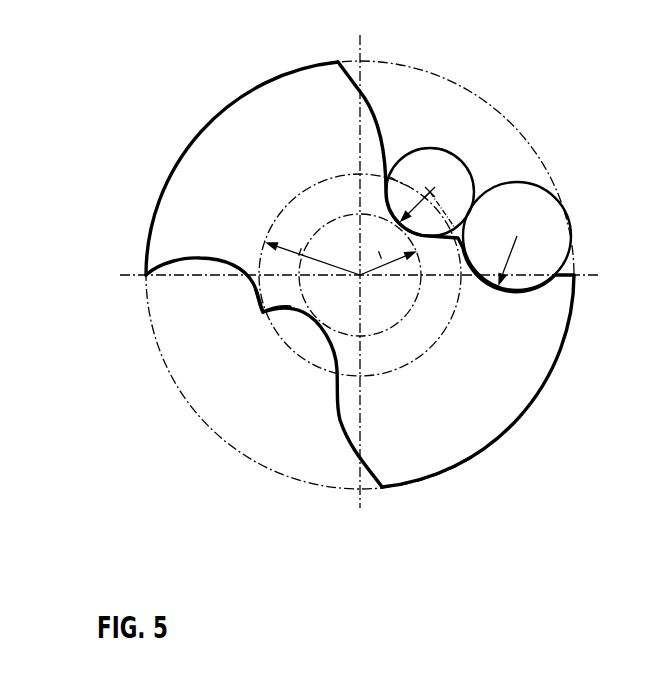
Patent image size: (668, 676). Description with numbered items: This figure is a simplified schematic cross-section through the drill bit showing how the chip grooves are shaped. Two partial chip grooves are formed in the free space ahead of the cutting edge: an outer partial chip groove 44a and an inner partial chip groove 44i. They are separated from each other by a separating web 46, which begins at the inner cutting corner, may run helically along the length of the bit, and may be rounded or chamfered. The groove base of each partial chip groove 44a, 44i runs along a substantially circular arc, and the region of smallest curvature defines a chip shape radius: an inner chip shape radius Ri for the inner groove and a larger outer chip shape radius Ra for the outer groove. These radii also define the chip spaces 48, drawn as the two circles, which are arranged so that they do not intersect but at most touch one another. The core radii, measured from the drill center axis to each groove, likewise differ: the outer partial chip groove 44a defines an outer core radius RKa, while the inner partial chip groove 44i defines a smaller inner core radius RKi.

The outer partial chip groove 44a is at (201, 269).
The inner partial chip groove 44i is at (300, 337).
The separating web 46 is at (262, 312).
The chip spaces 48 is at (535, 227).
The inner chip shape radius Ri is at (416, 203).
The outer chip shape radius Ra is at (515, 253).
The outer core radius RKa is at (313, 251).
The inner core radius RKi is at (387, 253).